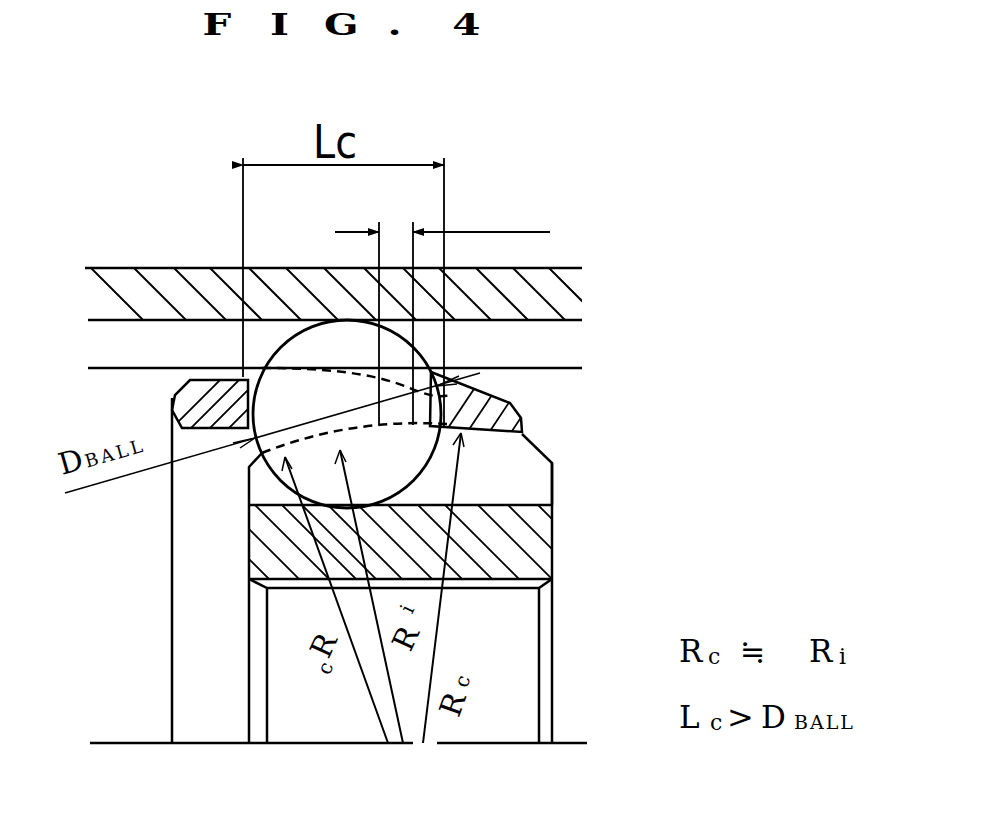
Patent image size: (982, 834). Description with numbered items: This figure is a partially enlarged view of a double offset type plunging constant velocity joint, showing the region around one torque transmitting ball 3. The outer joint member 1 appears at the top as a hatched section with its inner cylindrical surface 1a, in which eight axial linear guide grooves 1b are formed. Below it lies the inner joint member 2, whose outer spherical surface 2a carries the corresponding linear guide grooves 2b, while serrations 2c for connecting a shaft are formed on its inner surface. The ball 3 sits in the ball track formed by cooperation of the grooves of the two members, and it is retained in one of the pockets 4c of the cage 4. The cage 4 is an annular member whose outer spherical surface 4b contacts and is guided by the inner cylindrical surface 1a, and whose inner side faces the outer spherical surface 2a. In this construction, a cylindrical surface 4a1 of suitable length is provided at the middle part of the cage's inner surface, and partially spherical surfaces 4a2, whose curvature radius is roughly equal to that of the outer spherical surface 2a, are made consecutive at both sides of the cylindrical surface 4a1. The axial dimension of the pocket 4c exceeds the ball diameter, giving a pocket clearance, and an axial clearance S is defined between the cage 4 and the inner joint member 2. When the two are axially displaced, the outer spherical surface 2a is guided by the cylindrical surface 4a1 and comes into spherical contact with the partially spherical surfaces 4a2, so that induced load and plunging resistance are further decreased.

The outer joint member 1 is at (118, 270).
The inner cylindrical surface 1a is at (127, 370).
The linear guide grooves 1b is at (127, 322).
The inner joint member 2 is at (258, 561).
The outer spherical surface 2a is at (540, 457).
The linear guide grooves 2b is at (500, 505).
The serrations 2c is at (490, 587).
The torque transmitting balls 3 is at (262, 367).
The cage 4 is at (180, 399).
The cylindrical surface 4a1 is at (442, 302).
The partially spherical surfaces 4a2 is at (524, 420).
The outer spherical surface 4b is at (480, 406).
The pockets 4c is at (249, 408).
The axial clearance S is at (473, 430).